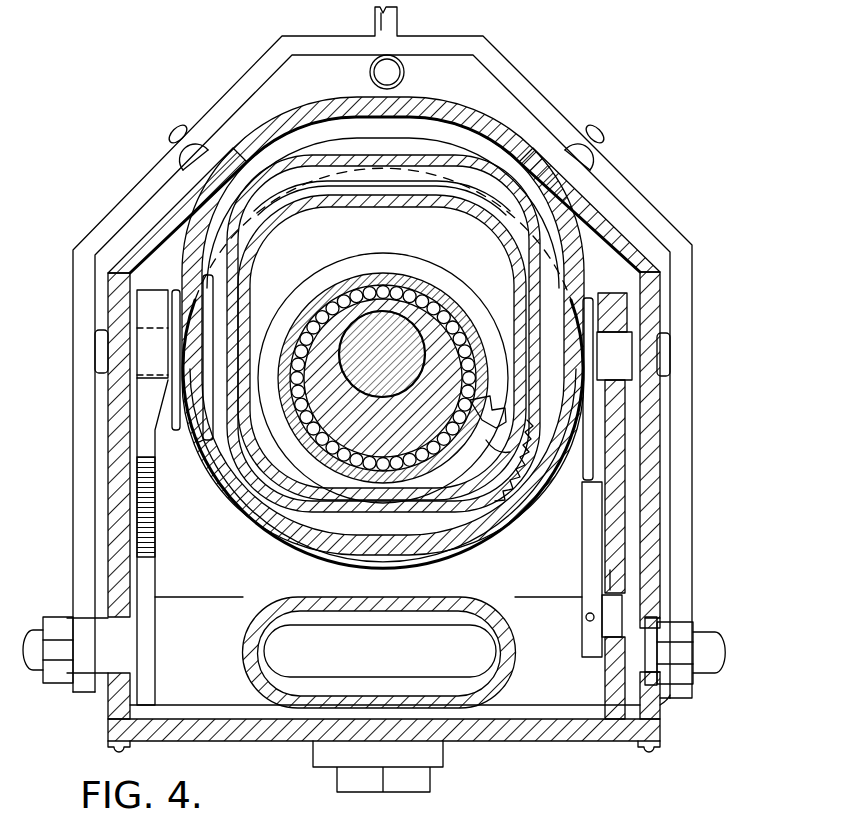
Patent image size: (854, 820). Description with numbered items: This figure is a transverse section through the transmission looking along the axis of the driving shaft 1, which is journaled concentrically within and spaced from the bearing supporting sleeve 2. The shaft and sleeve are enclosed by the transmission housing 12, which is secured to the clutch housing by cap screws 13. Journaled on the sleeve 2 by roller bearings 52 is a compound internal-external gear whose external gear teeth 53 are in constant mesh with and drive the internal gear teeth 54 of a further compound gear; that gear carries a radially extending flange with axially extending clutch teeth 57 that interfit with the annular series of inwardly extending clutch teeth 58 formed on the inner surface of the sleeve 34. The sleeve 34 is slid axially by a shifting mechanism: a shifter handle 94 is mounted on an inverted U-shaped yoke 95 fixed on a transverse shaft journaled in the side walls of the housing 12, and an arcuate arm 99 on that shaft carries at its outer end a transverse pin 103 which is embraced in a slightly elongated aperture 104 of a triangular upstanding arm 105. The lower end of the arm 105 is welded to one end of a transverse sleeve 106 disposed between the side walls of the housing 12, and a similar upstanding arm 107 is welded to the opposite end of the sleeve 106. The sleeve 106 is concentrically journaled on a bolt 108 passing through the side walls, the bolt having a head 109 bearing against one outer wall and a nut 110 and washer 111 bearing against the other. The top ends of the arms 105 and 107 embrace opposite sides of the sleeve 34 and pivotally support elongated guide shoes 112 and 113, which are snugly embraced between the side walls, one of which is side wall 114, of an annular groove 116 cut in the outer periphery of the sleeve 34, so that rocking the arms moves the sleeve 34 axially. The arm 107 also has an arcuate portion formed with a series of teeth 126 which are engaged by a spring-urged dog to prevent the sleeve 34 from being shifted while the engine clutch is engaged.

The driving shaft 1 is at (378, 345).
The bearing supporting sleeve 2 is at (440, 368).
The transmission housing 12 is at (343, 108).
The cap screws 13 is at (396, 72).
The sleeve 34 is at (418, 160).
The roller bearings 52 is at (416, 298).
The external gear teeth 53 is at (492, 402).
The internal gear teeth 54 is at (507, 455).
The clutch teeth 57 is at (490, 500).
The clutch teeth 58 is at (538, 455).
The shifter handle 94 is at (397, 22).
The yoke 95 is at (545, 107).
The arcuate arm 99 is at (590, 528).
The transverse pin 103 is at (600, 630).
The elongated aperture 104 is at (608, 577).
The upstanding arm 105 is at (615, 452).
The sleeve 106 is at (440, 588).
The upstanding arm 107 is at (153, 443).
The bolt 108 is at (380, 651).
The head 109 is at (95, 675).
The nut 110 is at (666, 697).
The washer 111 is at (650, 705).
The guide shoe 112 is at (592, 300).
The guide shoe 113 is at (170, 287).
The side wall 114 is at (367, 143).
The annular groove 116 is at (383, 156).
The teeth 126 is at (146, 511).